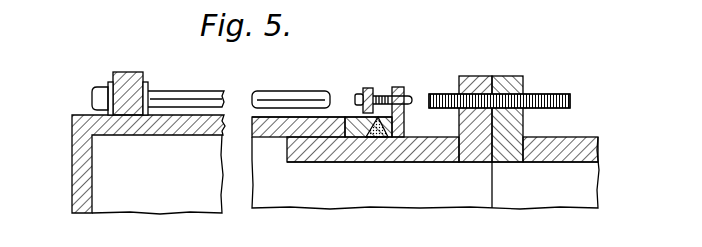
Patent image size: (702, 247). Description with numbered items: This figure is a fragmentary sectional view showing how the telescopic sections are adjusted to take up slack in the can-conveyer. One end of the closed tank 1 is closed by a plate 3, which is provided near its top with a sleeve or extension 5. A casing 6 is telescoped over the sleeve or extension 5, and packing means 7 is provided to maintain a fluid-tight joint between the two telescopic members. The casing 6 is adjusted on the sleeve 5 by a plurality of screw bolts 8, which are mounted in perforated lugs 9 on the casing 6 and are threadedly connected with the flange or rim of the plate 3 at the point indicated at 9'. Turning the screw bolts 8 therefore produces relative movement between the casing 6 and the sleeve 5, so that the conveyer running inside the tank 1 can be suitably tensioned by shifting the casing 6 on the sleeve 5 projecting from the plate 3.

The closed tank 1 is at (622, 119).
The plate 3 is at (466, 76).
The sleeve or extension 5 is at (416, 156).
The casing 6 is at (72, 173).
The packing means 7 is at (421, 72).
The screw bolts 8 is at (320, 70).
The perforated lugs 9 is at (158, 76).
The threaded connection 9' is at (499, 104).